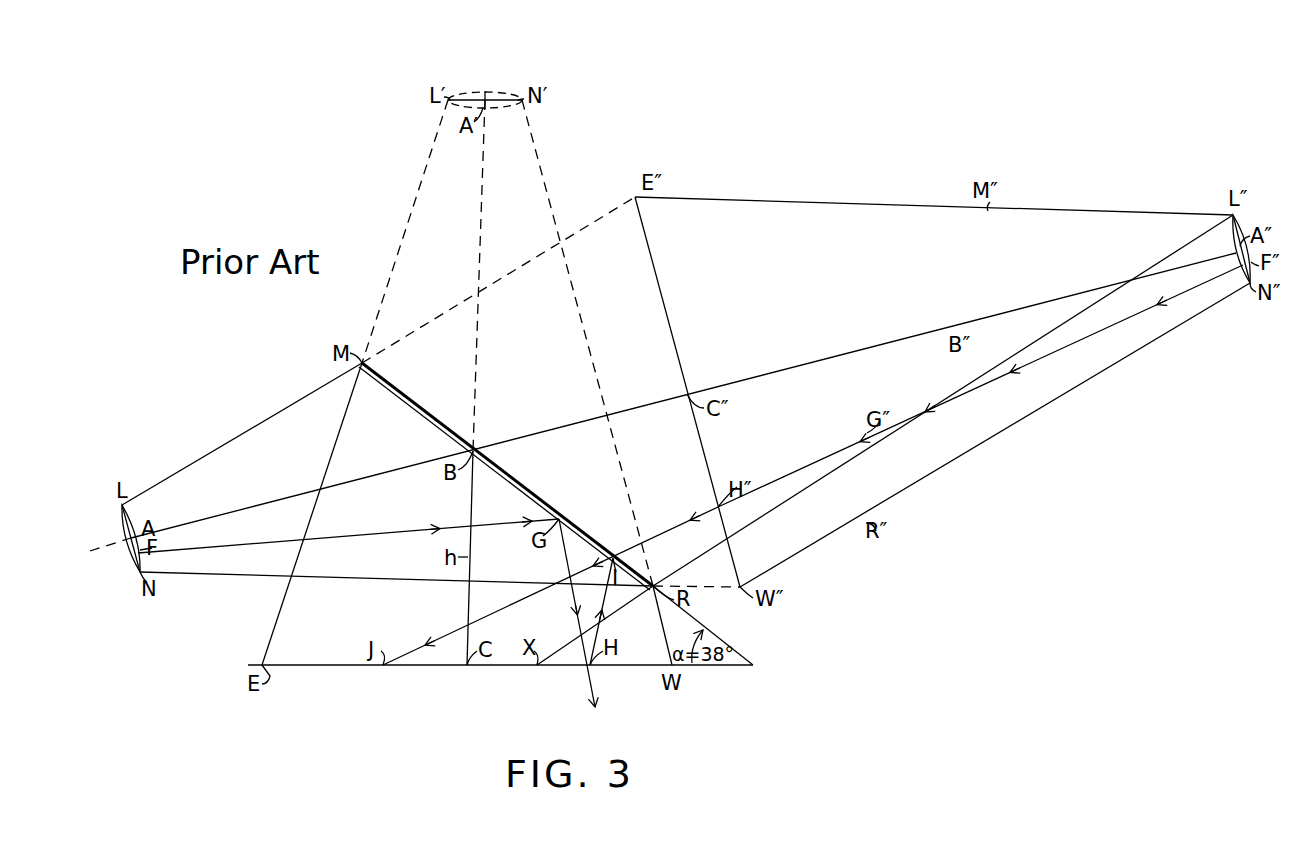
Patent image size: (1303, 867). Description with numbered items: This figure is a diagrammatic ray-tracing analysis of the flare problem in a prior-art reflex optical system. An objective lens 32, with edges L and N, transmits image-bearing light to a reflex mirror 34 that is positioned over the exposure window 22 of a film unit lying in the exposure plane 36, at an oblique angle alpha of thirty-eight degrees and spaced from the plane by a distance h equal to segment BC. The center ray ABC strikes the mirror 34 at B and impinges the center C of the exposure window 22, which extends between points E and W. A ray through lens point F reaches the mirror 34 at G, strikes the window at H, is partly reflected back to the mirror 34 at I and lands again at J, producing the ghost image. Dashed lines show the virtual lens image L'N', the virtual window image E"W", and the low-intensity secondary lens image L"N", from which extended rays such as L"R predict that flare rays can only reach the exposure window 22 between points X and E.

The objective lens 32 is at (138, 522).
The reflex mirror 34 is at (397, 392).
The exposure window 22 is at (312, 665).
The exposure plane 36 is at (722, 666).